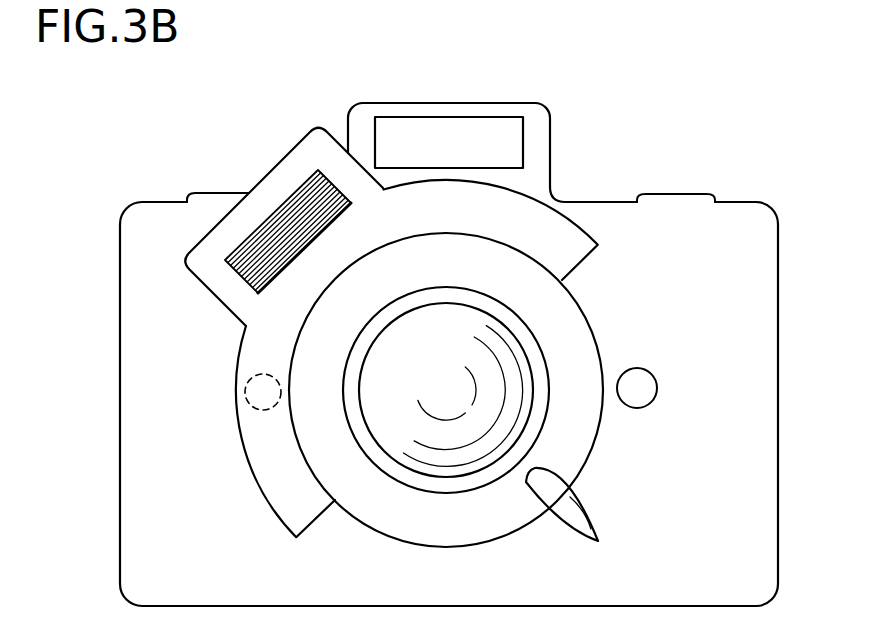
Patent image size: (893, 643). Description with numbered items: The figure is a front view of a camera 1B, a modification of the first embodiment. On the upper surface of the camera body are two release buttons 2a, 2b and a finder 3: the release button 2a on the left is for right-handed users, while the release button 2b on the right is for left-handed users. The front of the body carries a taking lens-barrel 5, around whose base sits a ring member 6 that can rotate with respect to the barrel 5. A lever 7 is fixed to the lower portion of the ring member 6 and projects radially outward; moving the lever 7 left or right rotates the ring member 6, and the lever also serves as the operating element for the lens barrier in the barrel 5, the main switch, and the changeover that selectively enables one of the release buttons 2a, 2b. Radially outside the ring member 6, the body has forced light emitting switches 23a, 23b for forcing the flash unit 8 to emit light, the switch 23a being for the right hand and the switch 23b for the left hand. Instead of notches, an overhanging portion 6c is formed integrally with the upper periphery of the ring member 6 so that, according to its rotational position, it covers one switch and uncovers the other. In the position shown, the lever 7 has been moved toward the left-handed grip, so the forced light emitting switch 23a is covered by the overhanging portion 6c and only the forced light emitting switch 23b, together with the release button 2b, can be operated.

The camera 1B is at (601, 141).
The release button 2a is at (207, 192).
The release button 2b is at (678, 193).
The finder 3 is at (497, 127).
The taking lens-barrel 5 is at (533, 343).
The ring member 6 is at (377, 508).
The overhanging portion 6c is at (272, 473).
The lever 7 is at (573, 523).
The flash unit 8 is at (318, 170).
The forced light emitting switch 23a is at (253, 392).
The forced light emitting switch 23b is at (645, 385).